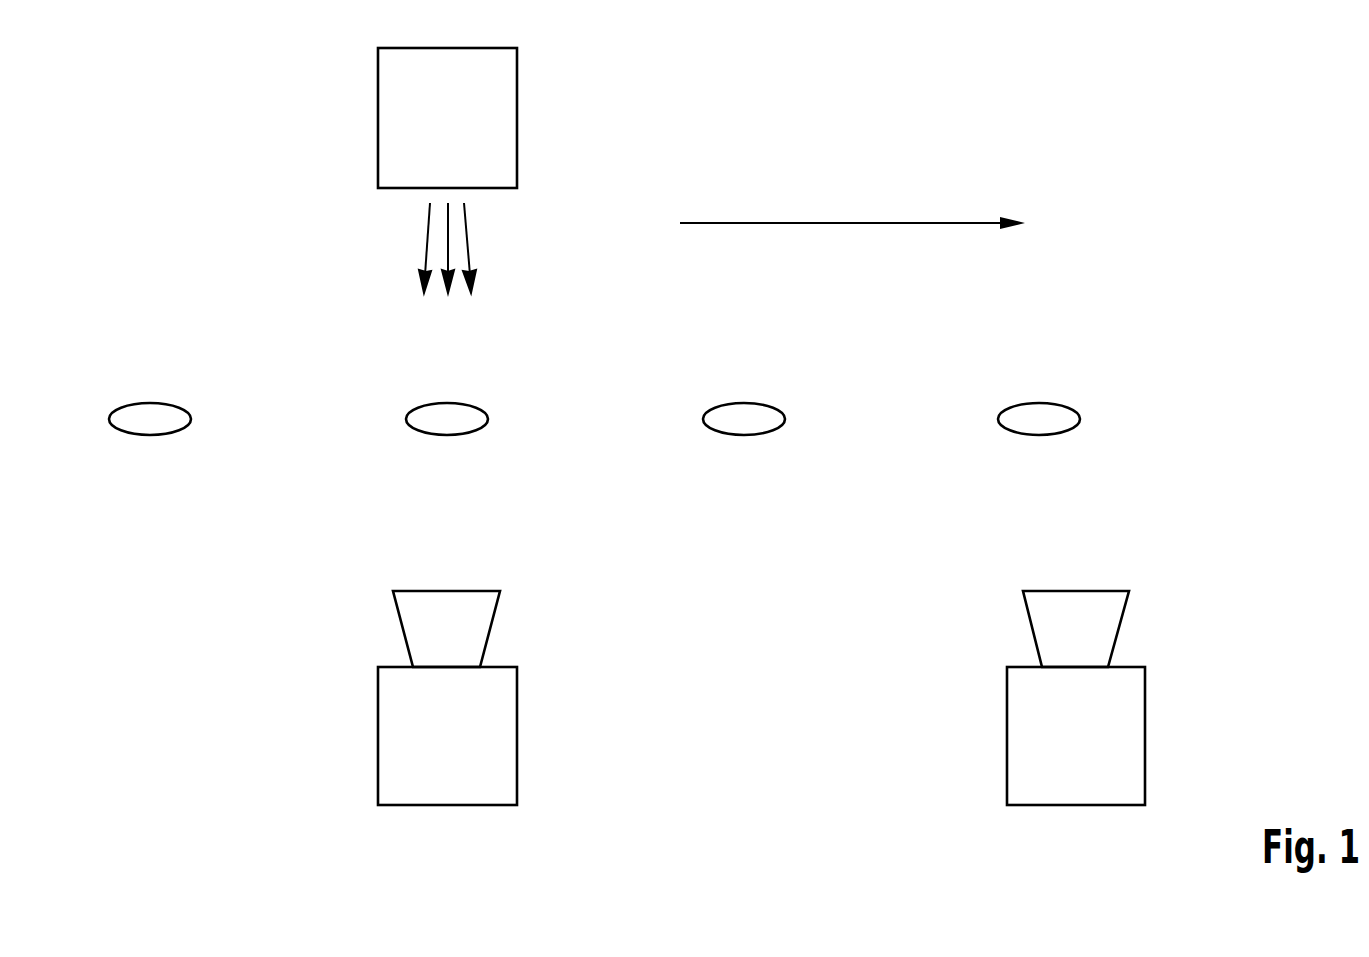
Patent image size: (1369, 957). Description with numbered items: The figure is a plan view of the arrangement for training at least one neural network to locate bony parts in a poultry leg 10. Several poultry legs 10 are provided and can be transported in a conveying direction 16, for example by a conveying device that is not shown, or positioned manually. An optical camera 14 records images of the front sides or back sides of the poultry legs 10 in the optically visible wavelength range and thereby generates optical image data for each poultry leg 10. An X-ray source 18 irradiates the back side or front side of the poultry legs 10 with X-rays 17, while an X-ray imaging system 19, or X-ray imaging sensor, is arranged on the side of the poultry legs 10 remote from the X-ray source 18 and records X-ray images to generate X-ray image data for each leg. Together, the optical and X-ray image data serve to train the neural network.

The poultry leg 10 is at (150, 420).
The optical camera 14 is at (1034, 735).
The conveying direction 16 is at (851, 222).
The X-rays 17 is at (398, 240).
The X-ray source 18 is at (404, 116).
The X-ray imaging system 19 is at (404, 735).